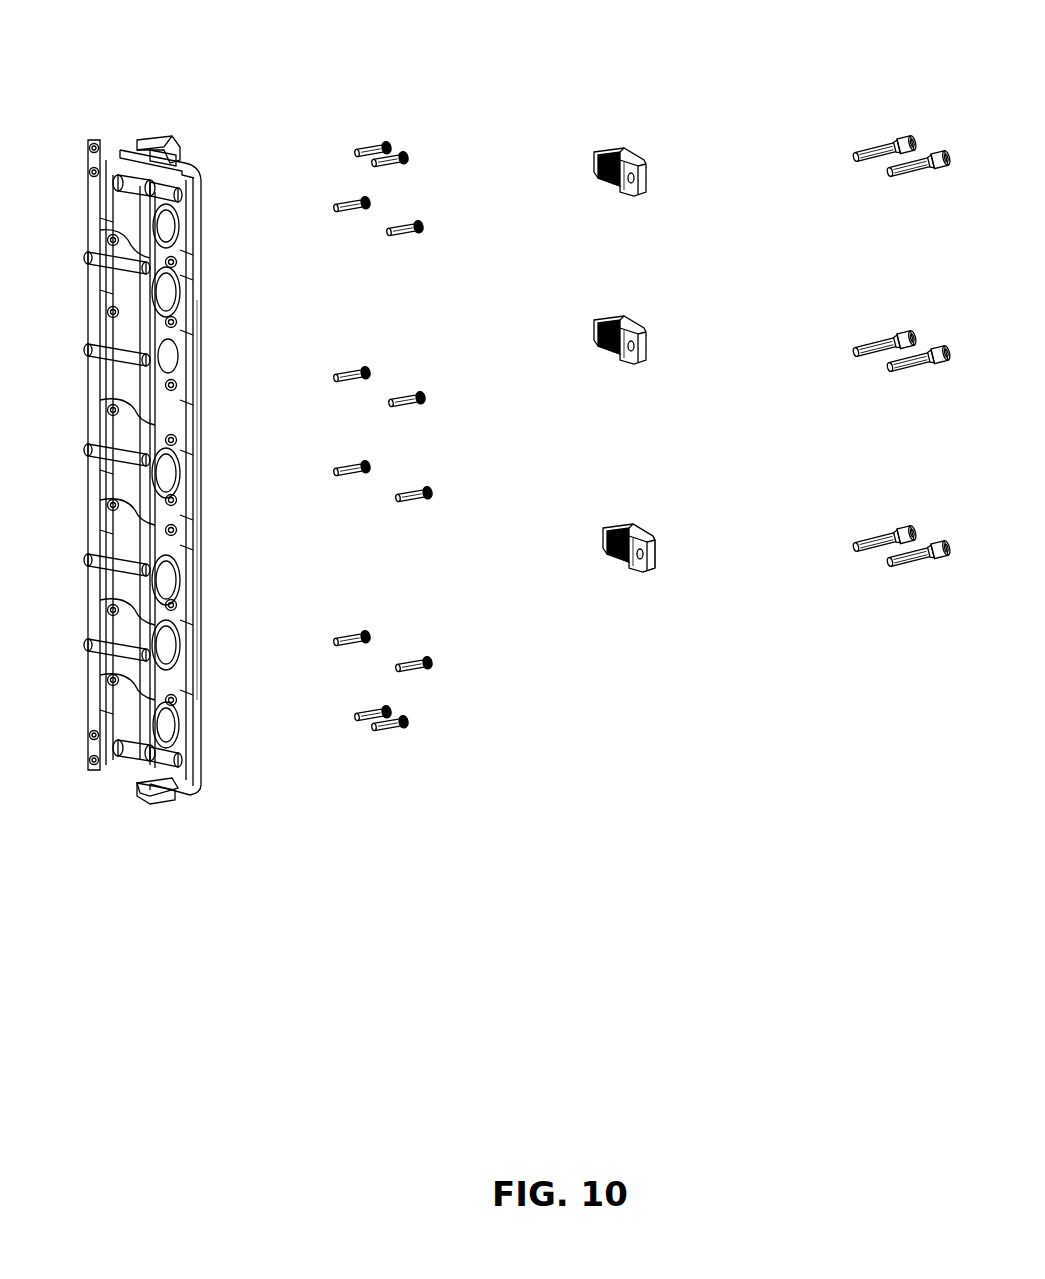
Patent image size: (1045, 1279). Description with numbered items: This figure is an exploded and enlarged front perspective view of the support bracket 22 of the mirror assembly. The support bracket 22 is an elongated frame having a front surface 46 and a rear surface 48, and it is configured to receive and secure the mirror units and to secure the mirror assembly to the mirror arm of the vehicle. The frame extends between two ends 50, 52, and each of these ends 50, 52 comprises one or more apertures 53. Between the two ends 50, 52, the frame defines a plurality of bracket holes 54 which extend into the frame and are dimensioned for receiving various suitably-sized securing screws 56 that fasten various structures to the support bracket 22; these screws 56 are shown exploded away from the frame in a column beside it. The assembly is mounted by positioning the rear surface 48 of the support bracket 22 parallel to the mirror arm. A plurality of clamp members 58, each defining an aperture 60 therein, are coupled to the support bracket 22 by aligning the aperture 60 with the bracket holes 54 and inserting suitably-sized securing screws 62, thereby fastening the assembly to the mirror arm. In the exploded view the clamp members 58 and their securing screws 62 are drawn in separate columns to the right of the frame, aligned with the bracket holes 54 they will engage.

The support bracket 22 is at (197, 176).
The front surface 46 is at (101, 478).
The rear surface 48 is at (203, 457).
The end 50 is at (152, 140).
The end 52 is at (148, 800).
The aperture 53 is at (160, 150).
The bracket hole 54 is at (120, 765).
The securing screw 56 is at (385, 735).
The clamp member 58 is at (636, 585).
The aperture 60 is at (652, 546).
The securing screw 62 is at (907, 560).